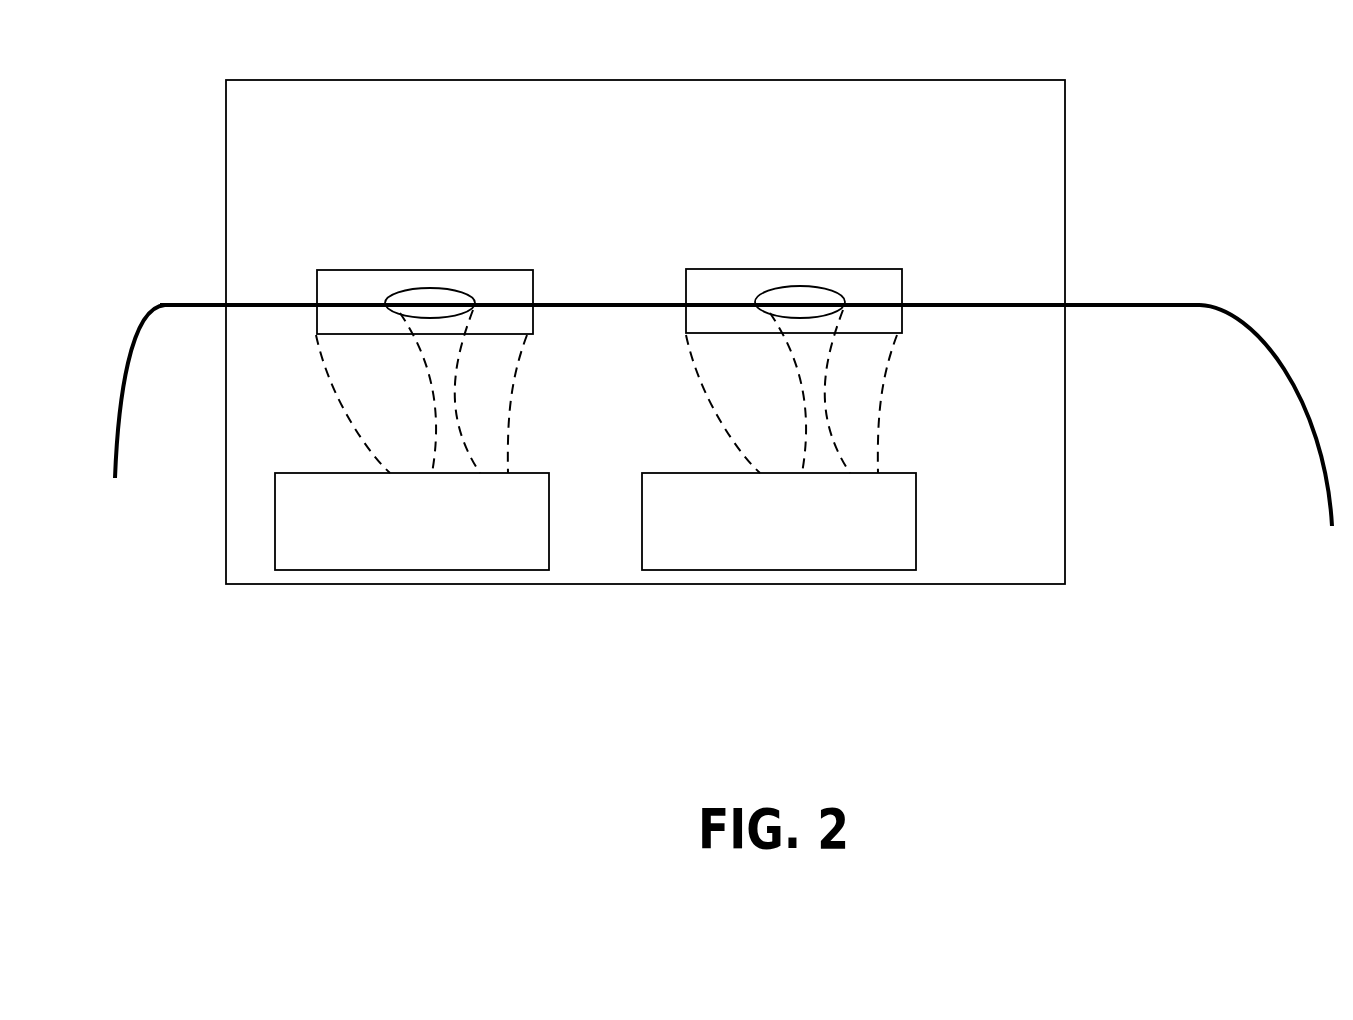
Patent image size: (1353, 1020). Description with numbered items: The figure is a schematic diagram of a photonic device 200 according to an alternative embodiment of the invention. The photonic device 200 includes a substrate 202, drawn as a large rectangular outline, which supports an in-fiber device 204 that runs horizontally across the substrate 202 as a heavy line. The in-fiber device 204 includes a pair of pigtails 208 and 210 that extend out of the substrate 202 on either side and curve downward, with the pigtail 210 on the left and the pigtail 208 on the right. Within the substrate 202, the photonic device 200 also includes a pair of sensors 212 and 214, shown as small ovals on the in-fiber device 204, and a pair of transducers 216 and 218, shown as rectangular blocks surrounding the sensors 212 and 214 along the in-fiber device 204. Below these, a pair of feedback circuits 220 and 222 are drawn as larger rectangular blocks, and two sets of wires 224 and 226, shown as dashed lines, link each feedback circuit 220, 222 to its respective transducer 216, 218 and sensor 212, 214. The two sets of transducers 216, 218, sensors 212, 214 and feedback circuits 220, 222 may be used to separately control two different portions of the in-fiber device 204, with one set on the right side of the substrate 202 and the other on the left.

The photonic device 200 is at (253, 717).
The substrate 202 is at (1068, 580).
The in-fiber device 204 is at (1124, 309).
The pigtail 208 is at (1282, 342).
The pigtail 210 is at (131, 407).
The sensor 212 is at (846, 296).
The sensor 214 is at (477, 296).
The transducer 216 is at (686, 268).
The transducer 218 is at (316, 267).
The feedback circuit 220 is at (905, 573).
The feedback circuit 222 is at (538, 573).
The set of wires 224 is at (756, 452).
The set of wires 226 is at (386, 452).